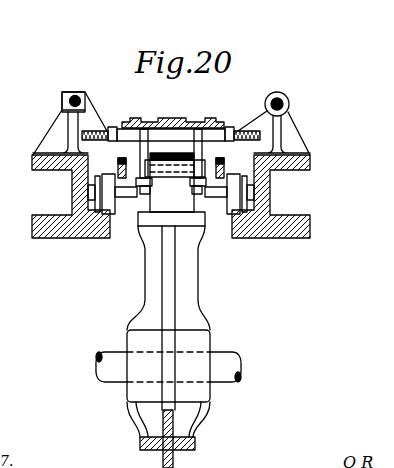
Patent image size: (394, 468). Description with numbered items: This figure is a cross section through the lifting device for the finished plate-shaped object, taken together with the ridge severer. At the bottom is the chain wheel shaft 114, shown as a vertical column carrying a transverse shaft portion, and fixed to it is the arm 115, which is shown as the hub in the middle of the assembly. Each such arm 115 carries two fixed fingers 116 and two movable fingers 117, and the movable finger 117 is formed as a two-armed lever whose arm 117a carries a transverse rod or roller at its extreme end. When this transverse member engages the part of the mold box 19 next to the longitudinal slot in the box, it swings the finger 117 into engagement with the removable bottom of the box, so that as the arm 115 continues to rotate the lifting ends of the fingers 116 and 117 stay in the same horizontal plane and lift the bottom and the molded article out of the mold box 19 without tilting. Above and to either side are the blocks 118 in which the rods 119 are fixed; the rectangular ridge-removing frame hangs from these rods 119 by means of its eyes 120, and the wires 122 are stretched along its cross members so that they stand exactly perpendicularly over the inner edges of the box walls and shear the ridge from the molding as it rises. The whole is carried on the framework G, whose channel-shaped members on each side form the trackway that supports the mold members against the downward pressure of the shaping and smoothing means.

The mold box 19 is at (118, 163).
The chain wheel shaft 114 is at (222, 363).
The arm 115 is at (171, 189).
The fixed finger 116 is at (127, 213).
The movable finger 117 is at (197, 153).
The arm of the movable finger 117a is at (140, 150).
The block 118 is at (52, 133).
The rod 119 is at (63, 101).
The eye 120 is at (76, 96).
The wire 122 is at (120, 126).
The framework G is at (72, 197).